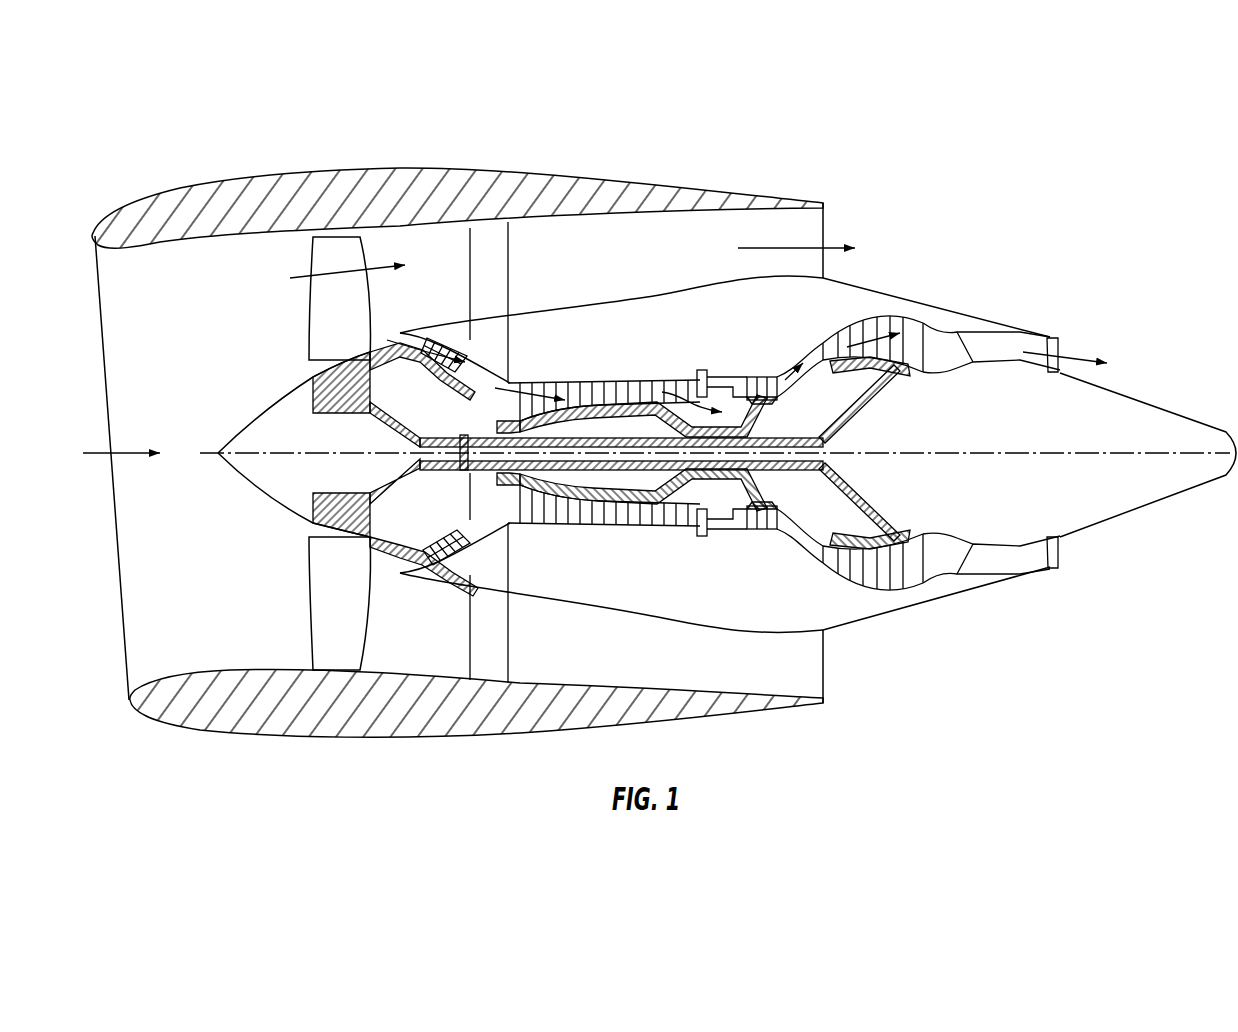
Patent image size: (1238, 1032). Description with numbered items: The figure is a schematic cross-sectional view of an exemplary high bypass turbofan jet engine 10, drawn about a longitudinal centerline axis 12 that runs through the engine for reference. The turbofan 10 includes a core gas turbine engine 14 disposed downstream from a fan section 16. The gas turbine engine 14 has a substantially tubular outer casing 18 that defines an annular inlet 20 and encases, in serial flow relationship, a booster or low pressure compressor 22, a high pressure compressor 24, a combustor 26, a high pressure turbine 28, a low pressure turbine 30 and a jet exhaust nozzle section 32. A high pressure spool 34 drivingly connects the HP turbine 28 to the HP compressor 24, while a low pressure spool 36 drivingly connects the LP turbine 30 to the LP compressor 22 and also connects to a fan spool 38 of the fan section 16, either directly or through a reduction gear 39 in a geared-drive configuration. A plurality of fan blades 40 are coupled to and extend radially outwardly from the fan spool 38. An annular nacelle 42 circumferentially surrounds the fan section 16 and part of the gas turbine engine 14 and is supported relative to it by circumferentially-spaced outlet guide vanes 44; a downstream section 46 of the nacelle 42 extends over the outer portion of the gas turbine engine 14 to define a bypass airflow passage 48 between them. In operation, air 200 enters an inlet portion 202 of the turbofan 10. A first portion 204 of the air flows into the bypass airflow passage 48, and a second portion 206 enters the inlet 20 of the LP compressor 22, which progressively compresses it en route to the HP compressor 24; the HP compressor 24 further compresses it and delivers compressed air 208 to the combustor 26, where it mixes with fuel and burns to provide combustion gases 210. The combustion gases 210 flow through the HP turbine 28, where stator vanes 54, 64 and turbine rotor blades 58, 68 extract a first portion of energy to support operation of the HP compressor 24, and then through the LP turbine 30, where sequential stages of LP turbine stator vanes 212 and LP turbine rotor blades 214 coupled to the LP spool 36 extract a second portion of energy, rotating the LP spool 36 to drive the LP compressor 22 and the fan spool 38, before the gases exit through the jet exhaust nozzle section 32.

The turbofan jet engine 10 is at (972, 185).
The longitudinal centerline axis 12 is at (997, 450).
The gas turbine engine 14 is at (683, 345).
The fan section 16 is at (362, 160).
The outer casing 18 is at (677, 623).
The annular inlet 20 is at (420, 563).
The low pressure compressor 22 is at (462, 546).
The high pressure compressor 24 is at (540, 517).
The combustor 26 is at (718, 517).
The high pressure turbine 28 is at (783, 517).
The low pressure turbine 30 is at (910, 590).
The jet exhaust nozzle section 32 is at (1067, 350).
The high pressure spool 34 is at (757, 402).
The low pressure spool 36 is at (468, 435).
The fan spool 38 is at (370, 413).
The reduction gear 39 is at (463, 470).
The fan blades 40 is at (310, 610).
The nacelle 42 is at (357, 740).
The outlet guide vanes 44 is at (508, 257).
The downstream section 46 is at (725, 190).
The bypass airflow passage 48 is at (640, 272).
The stator vanes 54 is at (733, 530).
The turbine rotor blades 58 is at (752, 530).
The stator vanes 64 is at (762, 533).
The turbine rotor blades 68 is at (773, 530).
The air 200 is at (118, 452).
The inlet portion 202 is at (130, 673).
The first portion of the air 204 is at (325, 263).
The second portion of the air 206 is at (400, 333).
The compressed air 208 is at (693, 383).
The combustion gases 210 is at (760, 376).
The LP turbine stator vanes 212 is at (835, 335).
The LP turbine rotor blades 214 is at (843, 327).